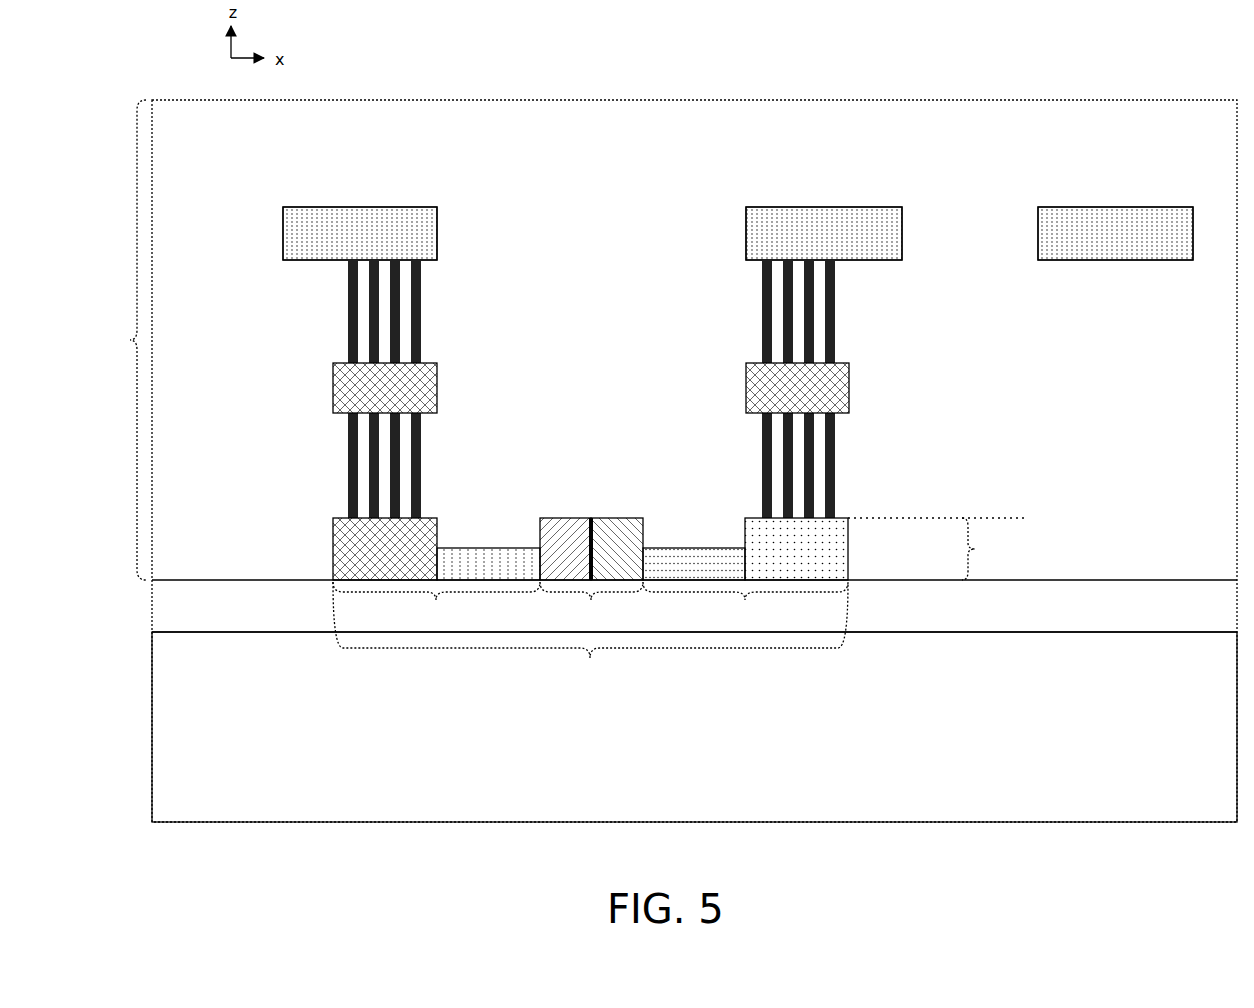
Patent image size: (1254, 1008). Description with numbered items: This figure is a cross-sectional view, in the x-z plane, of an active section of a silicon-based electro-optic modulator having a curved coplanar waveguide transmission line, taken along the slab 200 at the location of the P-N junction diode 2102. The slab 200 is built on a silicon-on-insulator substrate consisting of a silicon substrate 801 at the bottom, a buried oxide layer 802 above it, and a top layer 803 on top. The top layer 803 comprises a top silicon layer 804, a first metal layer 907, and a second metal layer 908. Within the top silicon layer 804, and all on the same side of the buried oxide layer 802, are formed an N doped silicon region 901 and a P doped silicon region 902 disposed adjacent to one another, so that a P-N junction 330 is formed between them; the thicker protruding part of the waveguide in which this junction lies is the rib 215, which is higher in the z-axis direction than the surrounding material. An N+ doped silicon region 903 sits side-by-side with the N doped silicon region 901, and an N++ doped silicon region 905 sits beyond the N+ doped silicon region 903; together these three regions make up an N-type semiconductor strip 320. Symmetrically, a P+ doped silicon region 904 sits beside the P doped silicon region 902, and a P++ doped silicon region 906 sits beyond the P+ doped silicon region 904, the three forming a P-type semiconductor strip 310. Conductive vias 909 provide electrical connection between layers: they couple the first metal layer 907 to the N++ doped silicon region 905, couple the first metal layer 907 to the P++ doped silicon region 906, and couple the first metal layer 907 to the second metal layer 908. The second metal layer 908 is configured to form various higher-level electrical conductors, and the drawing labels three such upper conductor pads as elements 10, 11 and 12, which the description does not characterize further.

The slab 200 is at (877, 100).
The cathode electrode 10 is at (872, 204).
The anode electrode 11 is at (312, 204).
The third electrode 12 is at (1147, 204).
The silicon substrate 801 is at (694, 727).
The buried oxide layer 802 is at (694, 606).
The top layer 803 is at (114, 340).
The top silicon layer 804 is at (992, 549).
The N doped silicon region 901 is at (604, 520).
The P doped silicon region 902 is at (578, 520).
The N+ doped silicon region 903 is at (725, 548).
The P+ doped silicon region 904 is at (463, 548).
The N++ doped silicon region 905 is at (848, 528).
The P++ doped silicon region 906 is at (340, 535).
The first metal layer 907 is at (437, 370).
The second metal layer 908 is at (437, 232).
The conductive vias 909 is at (760, 465).
The P-N junction 330 is at (595, 520).
The rib 215 is at (591, 609).
The P-type semiconductor strip 310 is at (436, 604).
The N-type semiconductor strip 320 is at (745, 604).
The P-N junction diode 2102 is at (590, 641).